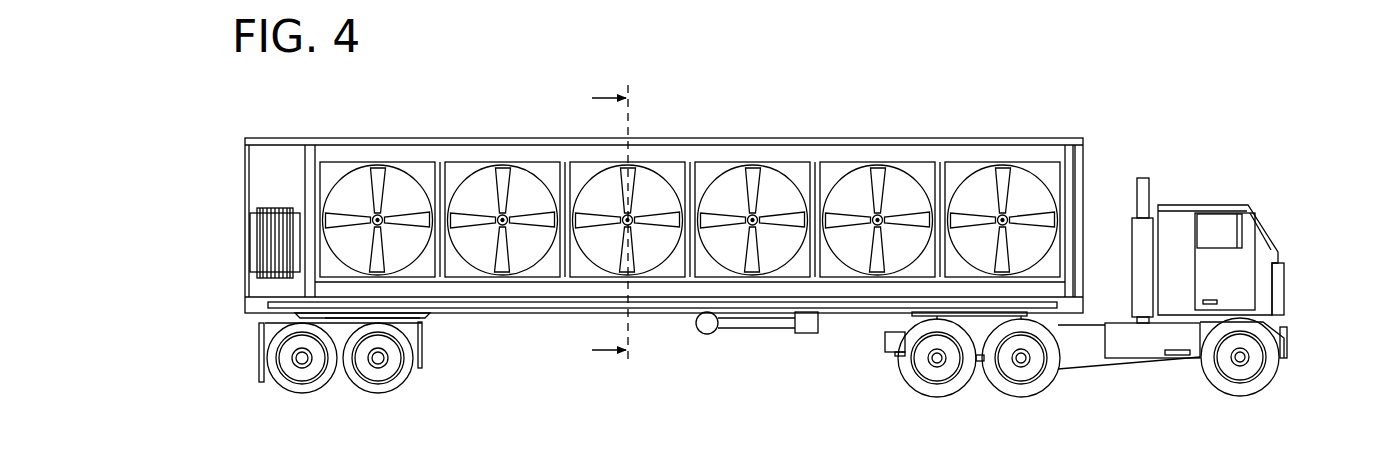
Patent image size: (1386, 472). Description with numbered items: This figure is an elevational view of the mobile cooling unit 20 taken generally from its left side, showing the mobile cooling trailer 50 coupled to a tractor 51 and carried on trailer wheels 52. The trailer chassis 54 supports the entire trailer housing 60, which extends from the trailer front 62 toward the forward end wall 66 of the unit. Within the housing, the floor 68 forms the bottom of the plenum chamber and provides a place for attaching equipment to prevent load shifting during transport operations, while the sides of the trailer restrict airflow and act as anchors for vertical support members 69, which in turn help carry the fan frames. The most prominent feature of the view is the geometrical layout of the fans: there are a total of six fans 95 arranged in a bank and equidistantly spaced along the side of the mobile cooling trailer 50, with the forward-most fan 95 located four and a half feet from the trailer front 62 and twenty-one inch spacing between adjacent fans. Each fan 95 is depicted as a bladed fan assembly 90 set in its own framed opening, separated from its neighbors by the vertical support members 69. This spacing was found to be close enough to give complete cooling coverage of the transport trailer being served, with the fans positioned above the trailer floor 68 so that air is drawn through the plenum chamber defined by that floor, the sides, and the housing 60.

The mobile cooling unit 20 is at (811, 83).
The mobile cooling trailer 50 is at (1059, 129).
The tractor 51 is at (1211, 204).
The trailer wheels 52 is at (263, 350).
The trailer chassis 54 is at (245, 300).
The trailer housing 60 is at (430, 130).
The trailer front 62 is at (1085, 164).
The front end wall with grille 66 is at (247, 162).
The trailer floor 68 is at (535, 310).
The vertical support members 69 is at (944, 164).
The fan 90 is at (758, 163).
The fan 95 is at (503, 182).